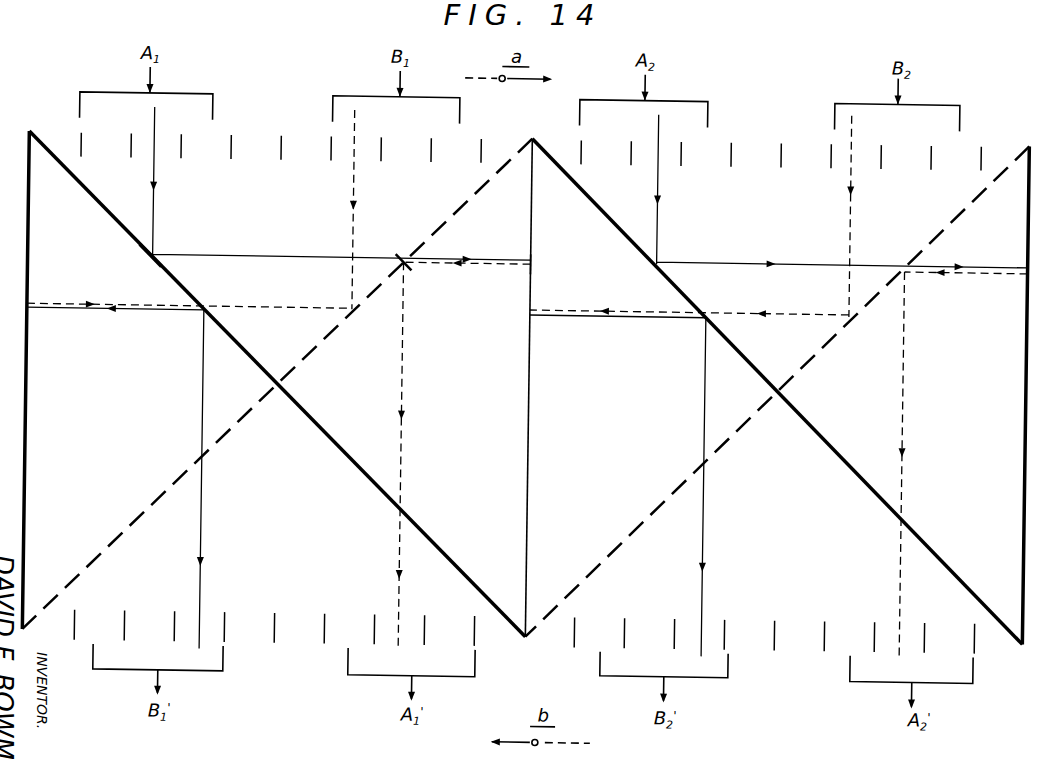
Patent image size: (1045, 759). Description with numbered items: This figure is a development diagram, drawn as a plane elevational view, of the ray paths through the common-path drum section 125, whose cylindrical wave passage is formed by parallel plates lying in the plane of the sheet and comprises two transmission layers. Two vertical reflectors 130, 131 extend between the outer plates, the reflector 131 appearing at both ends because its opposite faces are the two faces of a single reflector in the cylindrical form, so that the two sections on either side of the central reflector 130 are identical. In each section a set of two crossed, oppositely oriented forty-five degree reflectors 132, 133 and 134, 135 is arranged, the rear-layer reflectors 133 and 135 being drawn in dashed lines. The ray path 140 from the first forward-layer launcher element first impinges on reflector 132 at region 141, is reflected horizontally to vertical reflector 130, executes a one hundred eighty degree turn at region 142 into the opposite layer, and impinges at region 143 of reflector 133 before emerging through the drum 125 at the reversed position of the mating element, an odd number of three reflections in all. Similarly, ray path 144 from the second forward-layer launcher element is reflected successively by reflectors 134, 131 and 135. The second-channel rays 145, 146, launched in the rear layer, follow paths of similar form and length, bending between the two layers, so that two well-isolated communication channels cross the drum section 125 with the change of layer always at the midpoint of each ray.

The drum 125 is at (590, 464).
The vertical reflector 130 is at (531, 504).
The vertical reflector 131 is at (28, 458).
The 45° reflector 132 is at (352, 457).
The 45° reflector 133 is at (313, 354).
The 45° reflector 134 is at (861, 467).
The 45° reflector 135 is at (798, 369).
The ray path 140 is at (153, 219).
The region 141 is at (148, 256).
The region 142 is at (531, 264).
The region 143 is at (406, 264).
The ray path 144 is at (657, 222).
The ray path 145 is at (353, 235).
The ray path 146 is at (850, 228).